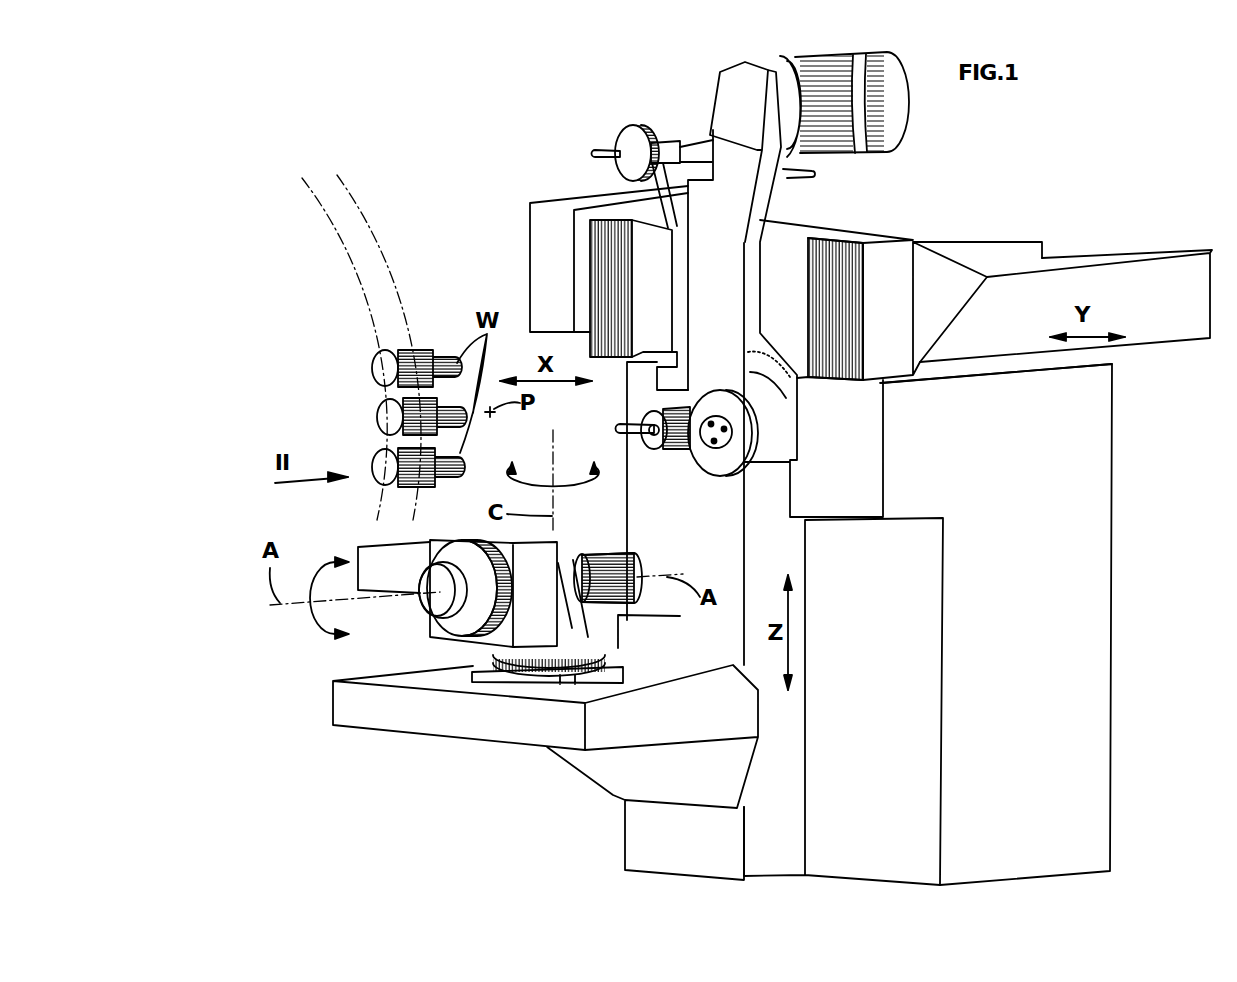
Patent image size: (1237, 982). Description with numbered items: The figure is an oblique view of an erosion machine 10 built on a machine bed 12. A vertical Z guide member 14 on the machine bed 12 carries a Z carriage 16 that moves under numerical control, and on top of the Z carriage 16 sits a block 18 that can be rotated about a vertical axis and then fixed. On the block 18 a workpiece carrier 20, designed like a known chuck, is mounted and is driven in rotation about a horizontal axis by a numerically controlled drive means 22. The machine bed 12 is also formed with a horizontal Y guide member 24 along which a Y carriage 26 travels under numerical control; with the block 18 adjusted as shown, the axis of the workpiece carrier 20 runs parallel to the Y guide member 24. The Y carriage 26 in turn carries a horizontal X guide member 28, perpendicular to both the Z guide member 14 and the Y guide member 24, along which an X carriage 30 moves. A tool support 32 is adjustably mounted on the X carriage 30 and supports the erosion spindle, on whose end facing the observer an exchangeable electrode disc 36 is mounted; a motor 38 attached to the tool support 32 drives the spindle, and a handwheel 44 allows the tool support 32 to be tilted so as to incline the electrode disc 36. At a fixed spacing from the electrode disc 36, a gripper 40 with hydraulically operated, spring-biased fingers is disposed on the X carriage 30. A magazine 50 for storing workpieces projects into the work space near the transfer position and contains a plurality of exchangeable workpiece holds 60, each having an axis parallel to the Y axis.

The erosion machine 10 is at (990, 203).
The machine bed 12 is at (1085, 607).
The Z guide member 14 is at (788, 719).
The Z carriage 16 is at (727, 722).
The block 18 is at (438, 647).
The workpiece carrier 20 is at (623, 563).
The drive means 22 is at (368, 557).
The Y guide member 24 is at (1035, 362).
The Y carriage 26 is at (1098, 258).
The X guide member 28 is at (940, 263).
The X carriage 30 is at (787, 257).
The tool support 32 is at (787, 427).
The electrode disc 36 is at (715, 463).
The motor 38 is at (887, 148).
The gripper 40 is at (643, 423).
The handwheel 44 is at (633, 140).
The magazine 50 is at (368, 180).
The workpiece holds 60 is at (378, 460).